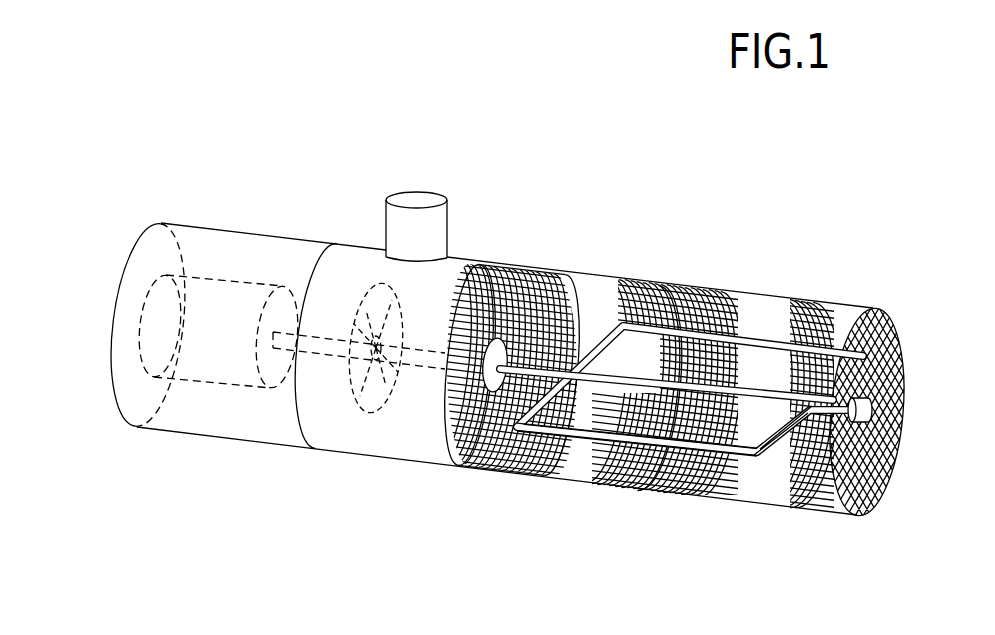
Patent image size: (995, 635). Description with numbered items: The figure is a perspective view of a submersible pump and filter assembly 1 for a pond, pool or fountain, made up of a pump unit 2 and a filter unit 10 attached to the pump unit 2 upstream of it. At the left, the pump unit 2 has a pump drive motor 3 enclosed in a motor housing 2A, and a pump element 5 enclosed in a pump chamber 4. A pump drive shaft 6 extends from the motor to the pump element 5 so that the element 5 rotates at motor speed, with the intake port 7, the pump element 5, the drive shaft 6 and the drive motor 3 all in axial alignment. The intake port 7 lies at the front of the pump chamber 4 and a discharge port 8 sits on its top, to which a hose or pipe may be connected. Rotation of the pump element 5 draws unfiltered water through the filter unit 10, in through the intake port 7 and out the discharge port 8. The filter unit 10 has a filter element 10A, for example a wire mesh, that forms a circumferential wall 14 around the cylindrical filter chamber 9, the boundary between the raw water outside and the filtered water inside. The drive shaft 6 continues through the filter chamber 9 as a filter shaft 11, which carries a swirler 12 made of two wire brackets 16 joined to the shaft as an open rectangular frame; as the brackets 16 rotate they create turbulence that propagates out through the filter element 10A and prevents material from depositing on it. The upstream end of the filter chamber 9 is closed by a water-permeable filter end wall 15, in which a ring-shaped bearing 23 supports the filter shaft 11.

The pump and filter assembly 1 is at (320, 100).
The pump unit 2 is at (198, 227).
The motor housing 2A is at (207, 425).
The pump drive motor 3 is at (230, 318).
The pump chamber 4 is at (412, 423).
The pump element 5 is at (370, 410).
The pump drive shaft 6 is at (312, 345).
The intake port 7 is at (503, 347).
The discharge port 8 is at (420, 207).
The filter chamber 9 is at (752, 318).
The filter unit 10 is at (695, 228).
The filter element 10A is at (830, 327).
The filter shaft 11 is at (635, 397).
The swirler 12 is at (573, 443).
The circumferential wall 14 is at (667, 285).
The filter end wall 15 is at (853, 467).
The wire brackets 16 is at (740, 457).
The bearing 23 is at (903, 370).